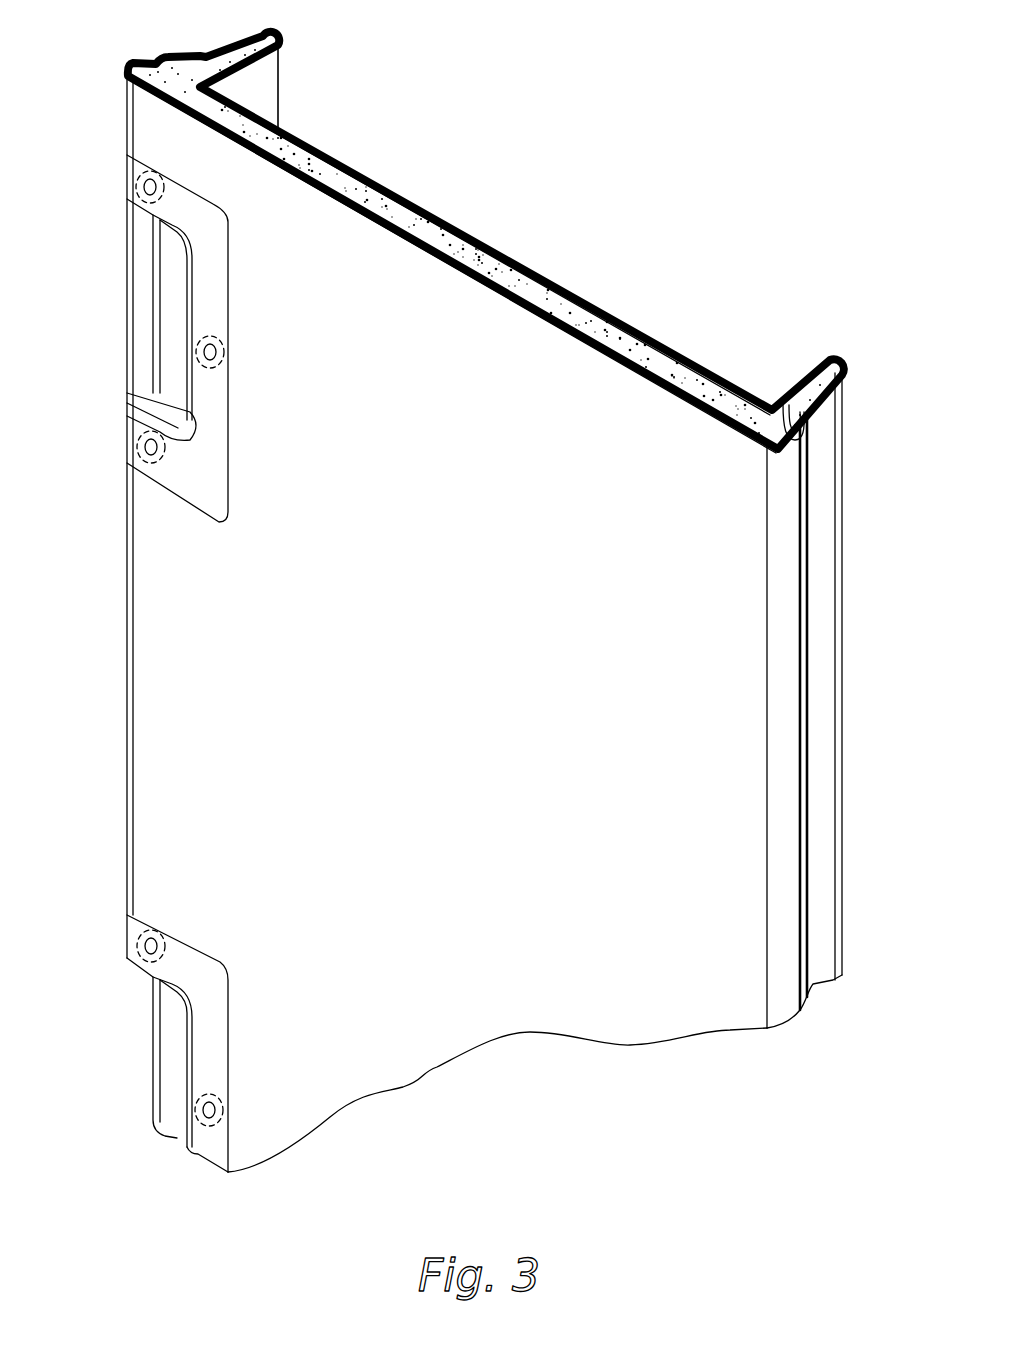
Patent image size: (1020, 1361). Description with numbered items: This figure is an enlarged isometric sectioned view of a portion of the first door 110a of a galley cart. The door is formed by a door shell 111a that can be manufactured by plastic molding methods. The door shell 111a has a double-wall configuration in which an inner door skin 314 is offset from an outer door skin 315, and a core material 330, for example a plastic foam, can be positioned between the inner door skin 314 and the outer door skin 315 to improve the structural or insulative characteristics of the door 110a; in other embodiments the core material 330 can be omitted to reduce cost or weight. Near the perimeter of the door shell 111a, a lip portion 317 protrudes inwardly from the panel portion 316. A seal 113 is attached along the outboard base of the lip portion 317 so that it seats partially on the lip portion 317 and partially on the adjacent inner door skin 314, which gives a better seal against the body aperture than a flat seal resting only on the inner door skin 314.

The first door 110a is at (491, 602).
The door shell 111a is at (270, 652).
The seal 113 is at (800, 418).
The inner door skin 314 is at (443, 312).
The outer door skin 315 is at (413, 320).
The panel portion 316 is at (657, 355).
The lip portion 317 is at (827, 404).
The core material 330 is at (367, 200).